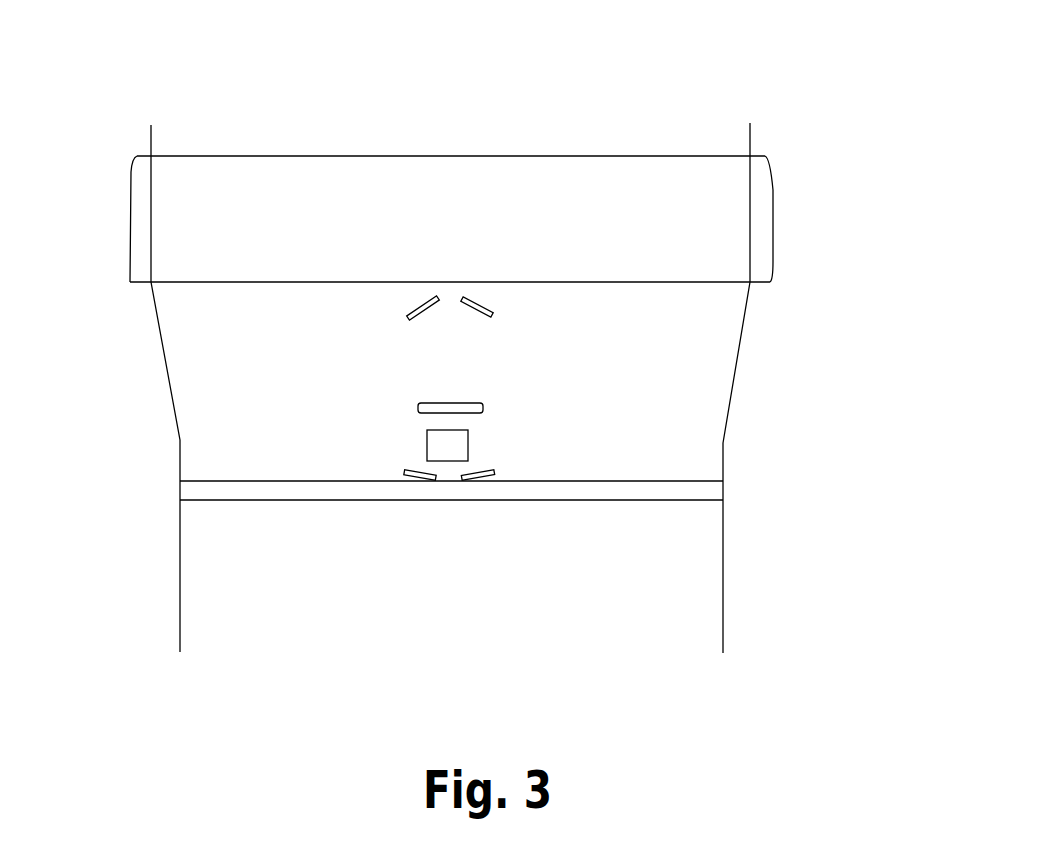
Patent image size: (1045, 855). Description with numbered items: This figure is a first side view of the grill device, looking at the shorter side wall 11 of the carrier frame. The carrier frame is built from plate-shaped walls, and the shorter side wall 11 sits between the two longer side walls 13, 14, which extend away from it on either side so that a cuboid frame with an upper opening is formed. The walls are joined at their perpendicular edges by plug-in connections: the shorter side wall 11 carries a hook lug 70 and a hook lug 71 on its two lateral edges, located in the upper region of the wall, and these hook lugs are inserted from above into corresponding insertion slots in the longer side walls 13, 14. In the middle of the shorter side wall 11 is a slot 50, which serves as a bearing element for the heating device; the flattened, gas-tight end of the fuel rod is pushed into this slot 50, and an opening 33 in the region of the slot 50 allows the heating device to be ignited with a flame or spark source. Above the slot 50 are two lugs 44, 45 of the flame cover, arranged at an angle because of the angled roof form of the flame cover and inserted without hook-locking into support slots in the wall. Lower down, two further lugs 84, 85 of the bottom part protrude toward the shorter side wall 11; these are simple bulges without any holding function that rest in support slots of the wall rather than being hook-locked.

The shorter side wall 11 is at (575, 170).
The hook lug 71 is at (137, 215).
The hook lug 70 is at (767, 218).
The longer side wall 14 is at (177, 538).
The longer side wall 13 is at (723, 570).
The lug 45 is at (418, 306).
The lug 44 is at (484, 310).
The latch bar 33 is at (419, 407).
The slot 50 is at (483, 410).
The lug 85 is at (410, 480).
The lug 84 is at (487, 480).